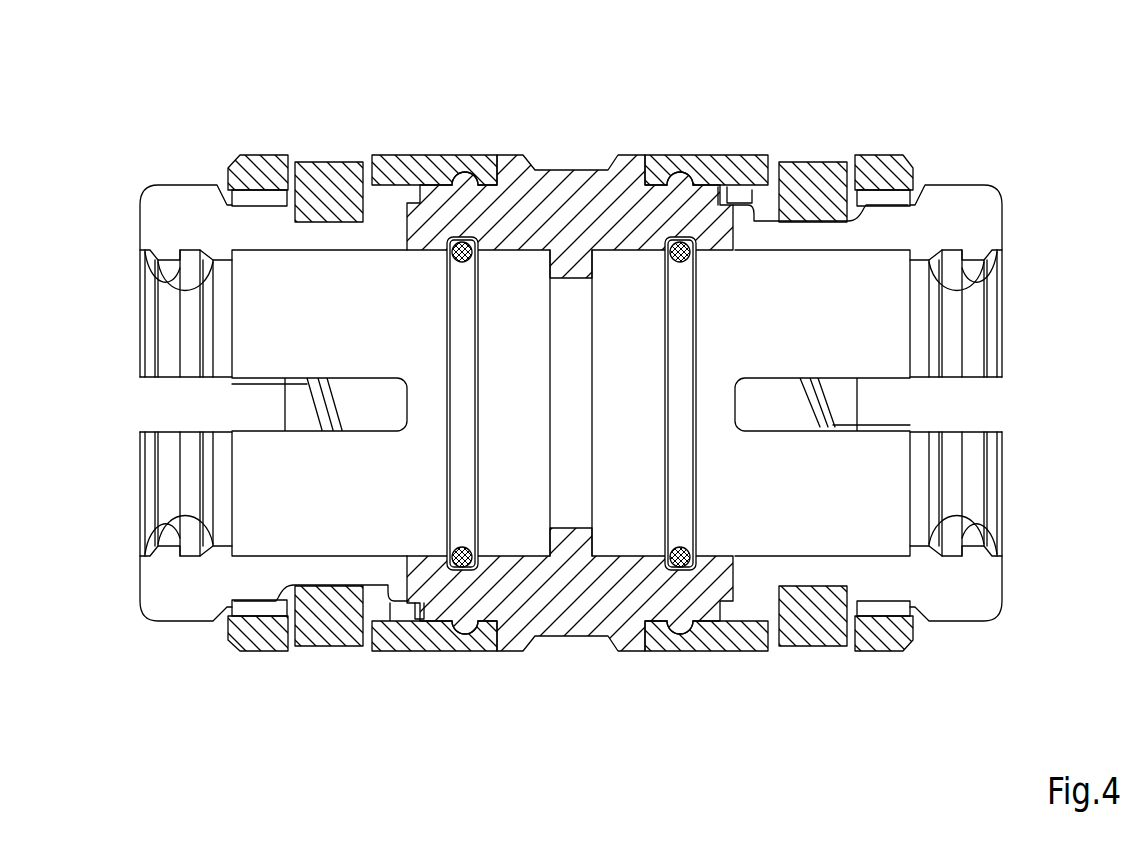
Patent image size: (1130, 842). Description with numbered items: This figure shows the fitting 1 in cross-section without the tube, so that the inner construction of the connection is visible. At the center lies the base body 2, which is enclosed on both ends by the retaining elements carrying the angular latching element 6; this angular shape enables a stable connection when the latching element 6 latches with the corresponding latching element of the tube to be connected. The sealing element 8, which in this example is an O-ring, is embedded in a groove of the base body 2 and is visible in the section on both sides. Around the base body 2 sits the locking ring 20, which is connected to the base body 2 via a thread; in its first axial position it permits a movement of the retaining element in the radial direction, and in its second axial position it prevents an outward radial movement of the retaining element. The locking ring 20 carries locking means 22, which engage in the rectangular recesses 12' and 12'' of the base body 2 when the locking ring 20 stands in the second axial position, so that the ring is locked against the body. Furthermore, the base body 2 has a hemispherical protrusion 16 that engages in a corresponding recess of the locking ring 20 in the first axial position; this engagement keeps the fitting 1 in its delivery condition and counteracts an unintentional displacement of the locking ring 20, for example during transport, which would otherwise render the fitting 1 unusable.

The fitting 1 is at (958, 110).
The base body 2 is at (577, 185).
The latching element 6 is at (140, 292).
The sealing element 8 is at (448, 262).
The locking means 12' is at (571, 403).
The locking means 12'' is at (571, 448).
The hemispherical protrusion 16 is at (469, 180).
The locking ring 20 is at (404, 168).
The locking means 22 is at (328, 165).